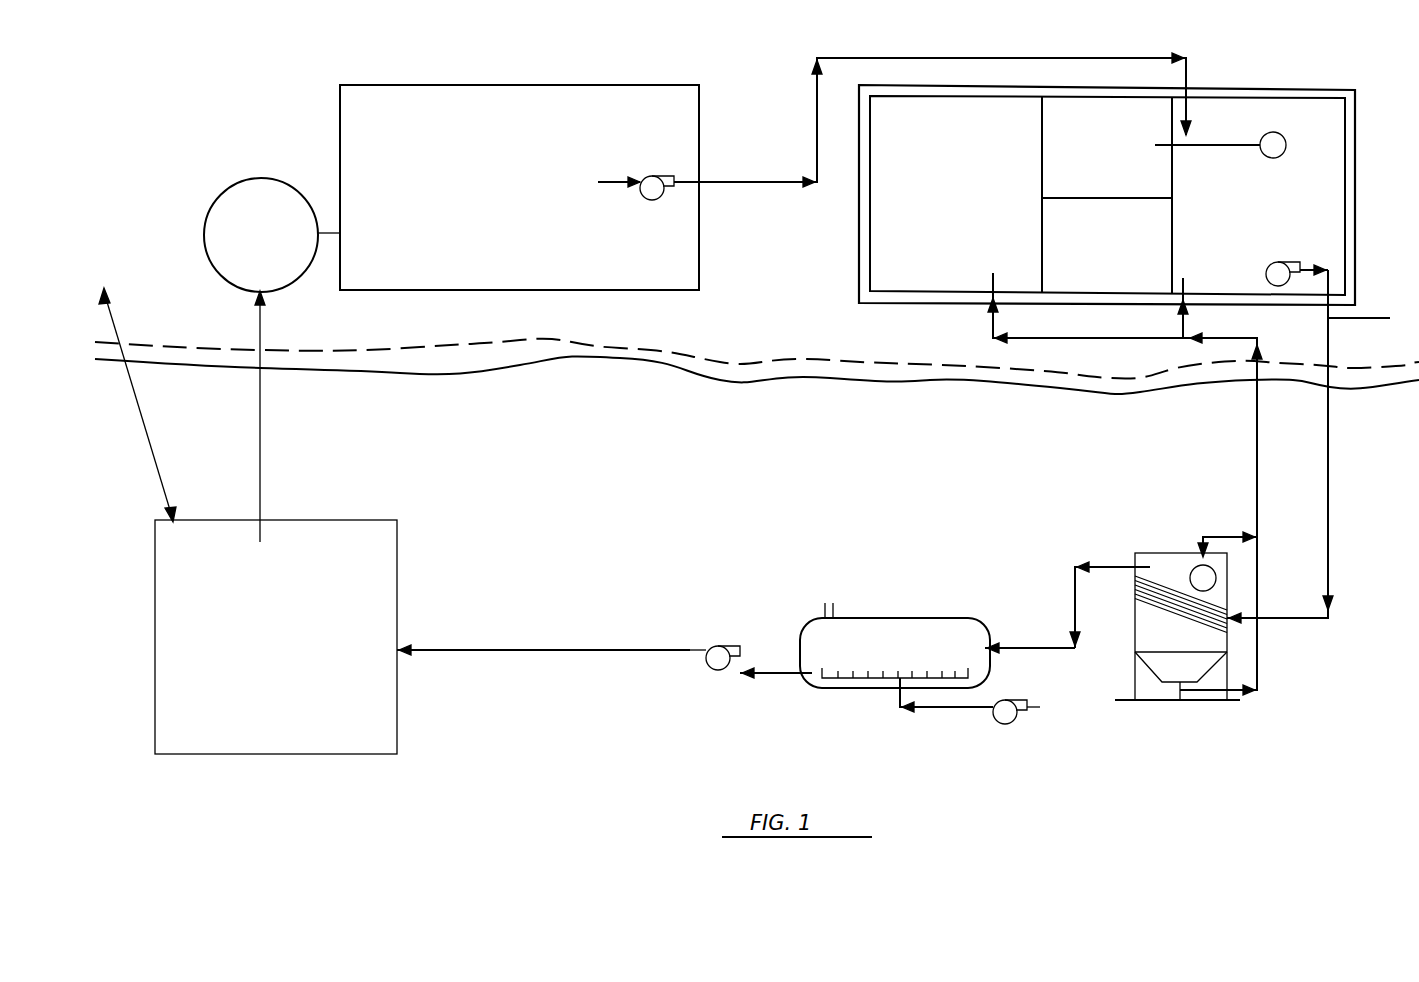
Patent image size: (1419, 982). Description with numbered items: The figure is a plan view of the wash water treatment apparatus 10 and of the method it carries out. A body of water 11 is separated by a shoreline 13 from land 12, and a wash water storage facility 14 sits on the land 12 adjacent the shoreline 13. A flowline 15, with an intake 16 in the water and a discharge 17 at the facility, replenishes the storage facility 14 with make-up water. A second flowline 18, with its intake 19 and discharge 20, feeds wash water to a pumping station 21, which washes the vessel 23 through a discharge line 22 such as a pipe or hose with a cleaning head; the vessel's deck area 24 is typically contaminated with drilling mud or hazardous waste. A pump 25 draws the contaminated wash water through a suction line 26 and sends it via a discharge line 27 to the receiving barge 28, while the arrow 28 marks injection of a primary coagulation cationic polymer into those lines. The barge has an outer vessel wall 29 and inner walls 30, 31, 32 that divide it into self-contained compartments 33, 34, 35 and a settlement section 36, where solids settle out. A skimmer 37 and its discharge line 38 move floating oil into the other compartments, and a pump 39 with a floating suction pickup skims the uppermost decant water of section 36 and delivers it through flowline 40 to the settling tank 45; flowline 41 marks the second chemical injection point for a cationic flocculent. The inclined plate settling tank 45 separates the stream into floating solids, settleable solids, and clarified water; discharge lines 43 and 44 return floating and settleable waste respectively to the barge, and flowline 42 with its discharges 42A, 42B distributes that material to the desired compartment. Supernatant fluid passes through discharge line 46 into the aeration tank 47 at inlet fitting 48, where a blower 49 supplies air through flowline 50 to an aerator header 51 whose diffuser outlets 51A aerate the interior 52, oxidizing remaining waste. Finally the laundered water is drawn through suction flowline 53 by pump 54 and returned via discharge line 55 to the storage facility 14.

The apparatus 10 is at (325, 56).
The body of water 11 is at (180, 143).
The land 12 is at (130, 471).
The shoreline 13 is at (706, 378).
The wash water storage facility 14 is at (362, 520).
The flowline 15 is at (148, 418).
The intake 16 is at (108, 294).
The discharge 17 is at (184, 518).
The flowline 18 is at (262, 432).
The intake 19 is at (260, 542).
The discharge 20 is at (248, 291).
The pumping station 21 is at (298, 190).
The discharge line 22 is at (318, 250).
The vessel 23 is at (444, 85).
The deck area 24 is at (470, 185).
The pump 25 is at (656, 202).
The suction line 26 is at (608, 182).
The discharge line 27 is at (992, 57).
The receiving barge 28 is at (630, 168).
The outer vessel wall 29 is at (1258, 95).
The inner wall 30 is at (1040, 150).
The inner wall 31 is at (1082, 200).
The inner wall 32 is at (1175, 223).
The compartment 33 is at (946, 257).
The compartment 34 is at (1106, 183).
The compartment 35 is at (1134, 277).
The settlement section 36 is at (1292, 219).
The skimmer 37 is at (1279, 159).
The discharge line 38 is at (1228, 145).
The pump 39 is at (1268, 266).
The flowline 40 is at (1330, 592).
The flowline 41 is at (1364, 322).
The flowline 42 is at (1258, 400).
The discharge 42A is at (1002, 326).
The discharge 42B is at (1190, 324).
The discharge line 43 is at (1226, 537).
The discharge line 44 is at (1251, 692).
The settling tank 45 is at (1135, 656).
The discharge line 46 is at (1073, 568).
The aeration tank 47 is at (867, 618).
The inlet fitting 48 is at (990, 646).
The blower 49 is at (999, 726).
The flowline 50 is at (905, 716).
The aerator header 51 is at (898, 676).
The diffuser outlets 51A is at (826, 667).
The interior 52 is at (914, 636).
The suction flowline 53 is at (768, 682).
The pump 54 is at (725, 646).
The discharge line 55 is at (590, 648).